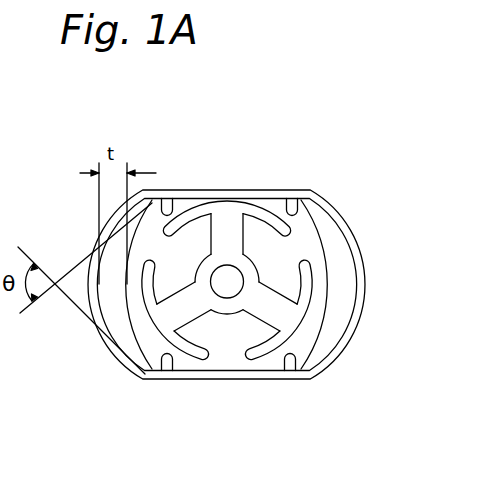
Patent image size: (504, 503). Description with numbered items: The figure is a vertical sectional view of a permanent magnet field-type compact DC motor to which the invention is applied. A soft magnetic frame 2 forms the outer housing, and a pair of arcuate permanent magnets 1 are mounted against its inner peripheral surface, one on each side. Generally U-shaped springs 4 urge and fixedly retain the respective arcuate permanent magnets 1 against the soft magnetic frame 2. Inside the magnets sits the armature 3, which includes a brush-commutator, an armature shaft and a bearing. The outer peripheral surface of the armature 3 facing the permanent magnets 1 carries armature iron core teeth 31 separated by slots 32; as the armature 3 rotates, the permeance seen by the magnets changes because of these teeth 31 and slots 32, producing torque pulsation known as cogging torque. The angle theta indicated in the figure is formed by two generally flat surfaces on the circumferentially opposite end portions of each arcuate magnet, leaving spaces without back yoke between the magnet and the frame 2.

The arcuate permanent magnets 1 is at (328, 307).
The soft magnetic frame 2 is at (268, 189).
The armature 3 is at (215, 317).
The U-shaped springs 4 is at (290, 359).
The armature iron core teeth 31 is at (165, 317).
The slots 32 is at (228, 338).